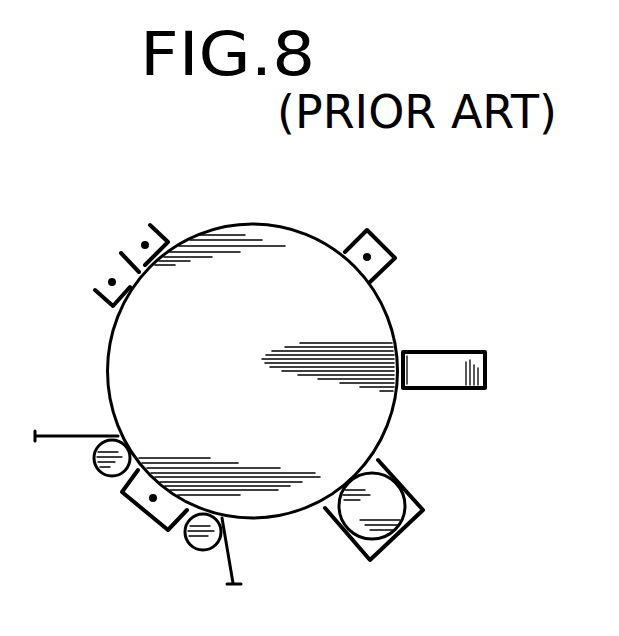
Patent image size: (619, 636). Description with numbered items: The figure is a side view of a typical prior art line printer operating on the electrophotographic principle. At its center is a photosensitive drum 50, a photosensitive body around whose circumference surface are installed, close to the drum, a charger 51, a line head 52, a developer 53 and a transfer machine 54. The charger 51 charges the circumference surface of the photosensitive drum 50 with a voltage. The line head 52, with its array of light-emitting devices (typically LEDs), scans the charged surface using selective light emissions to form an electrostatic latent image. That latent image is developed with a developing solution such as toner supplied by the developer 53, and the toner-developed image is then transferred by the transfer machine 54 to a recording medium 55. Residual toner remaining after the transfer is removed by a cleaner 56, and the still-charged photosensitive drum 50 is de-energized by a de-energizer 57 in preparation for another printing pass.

The photosensitive drum 50 is at (242, 228).
The charger 51 is at (367, 257).
The line head 52 is at (485, 371).
The developer 53 is at (417, 520).
The transfer machine 54 is at (140, 503).
The recording medium 55 is at (235, 563).
The cleaner 56 is at (112, 282).
The de-energizer 57 is at (150, 226).